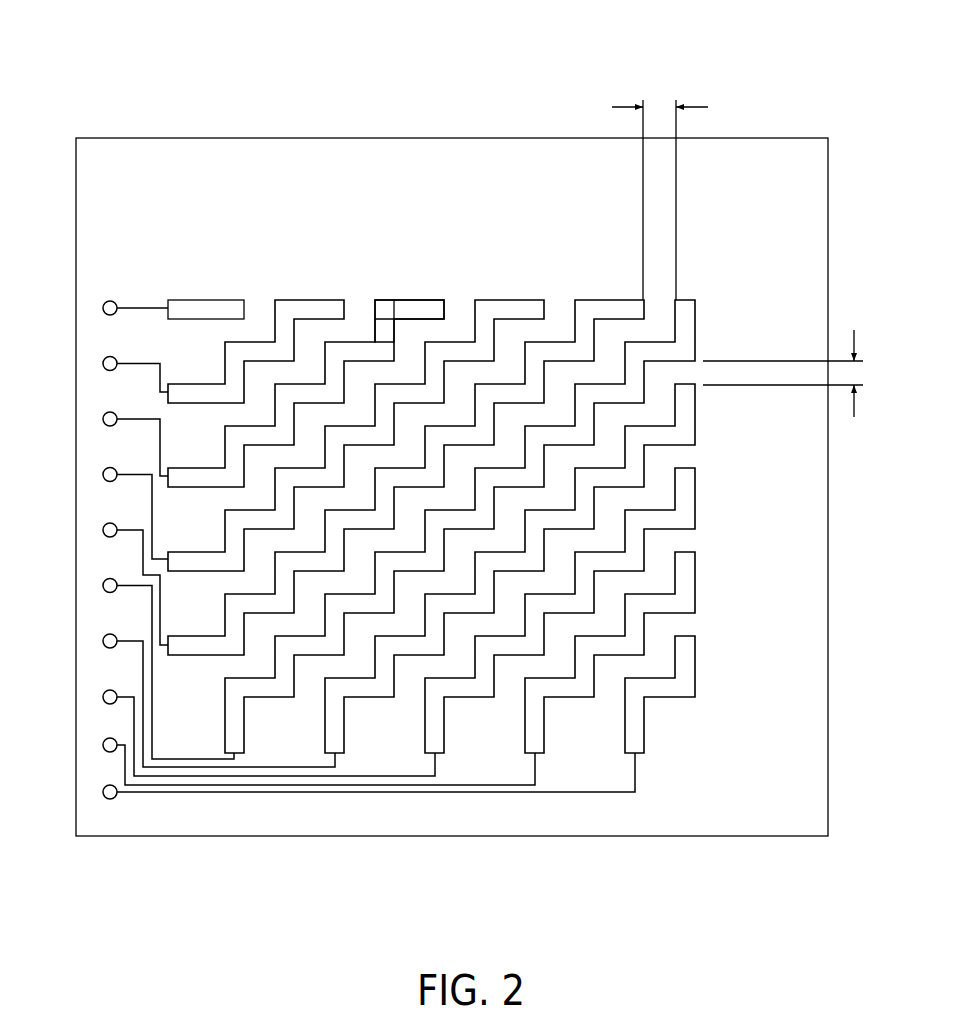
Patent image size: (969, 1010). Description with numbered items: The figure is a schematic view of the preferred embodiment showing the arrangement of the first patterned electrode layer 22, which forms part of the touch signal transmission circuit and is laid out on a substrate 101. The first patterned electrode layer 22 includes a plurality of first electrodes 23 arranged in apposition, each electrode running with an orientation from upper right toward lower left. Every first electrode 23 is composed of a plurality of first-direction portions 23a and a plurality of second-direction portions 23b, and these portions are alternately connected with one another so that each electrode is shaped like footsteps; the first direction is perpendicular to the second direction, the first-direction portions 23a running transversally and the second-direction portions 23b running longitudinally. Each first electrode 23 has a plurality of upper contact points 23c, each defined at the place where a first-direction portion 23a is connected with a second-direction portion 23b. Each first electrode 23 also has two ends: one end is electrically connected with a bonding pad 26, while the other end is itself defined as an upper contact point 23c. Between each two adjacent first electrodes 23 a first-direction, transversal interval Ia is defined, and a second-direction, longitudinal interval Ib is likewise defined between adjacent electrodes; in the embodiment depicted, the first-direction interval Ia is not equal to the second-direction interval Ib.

The substrate 101 is at (829, 196).
The first patterned electrode layer 22 is at (291, 297).
The first electrode 23 is at (335, 64).
The first-direction portion 23a is at (428, 303).
The second-direction portion 23b is at (375, 322).
The upper contact point 23c is at (388, 307).
The bonding pad 26 is at (102, 418).
The first-direction interval Ia is at (660, 185).
The second-direction interval Ib is at (783, 359).